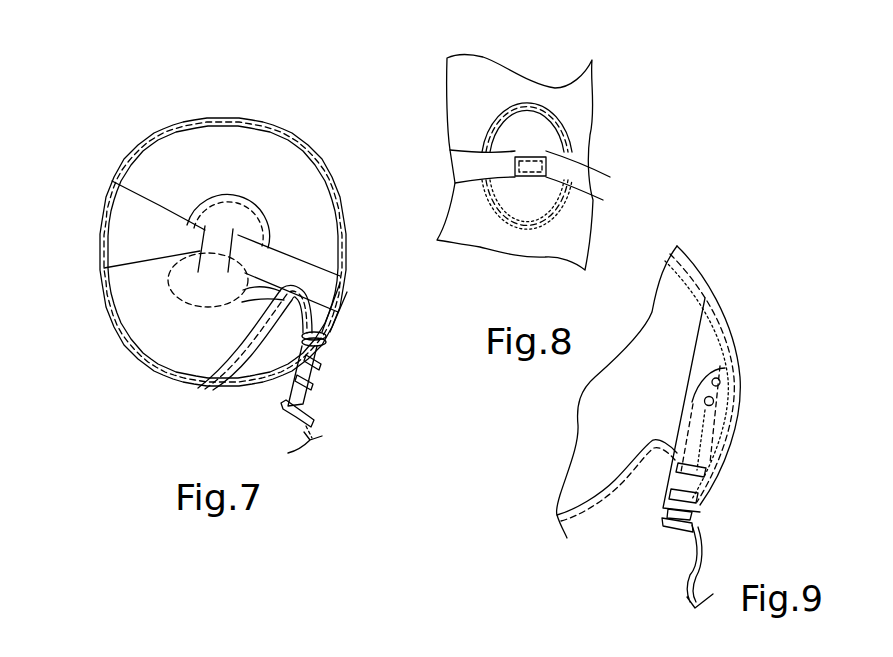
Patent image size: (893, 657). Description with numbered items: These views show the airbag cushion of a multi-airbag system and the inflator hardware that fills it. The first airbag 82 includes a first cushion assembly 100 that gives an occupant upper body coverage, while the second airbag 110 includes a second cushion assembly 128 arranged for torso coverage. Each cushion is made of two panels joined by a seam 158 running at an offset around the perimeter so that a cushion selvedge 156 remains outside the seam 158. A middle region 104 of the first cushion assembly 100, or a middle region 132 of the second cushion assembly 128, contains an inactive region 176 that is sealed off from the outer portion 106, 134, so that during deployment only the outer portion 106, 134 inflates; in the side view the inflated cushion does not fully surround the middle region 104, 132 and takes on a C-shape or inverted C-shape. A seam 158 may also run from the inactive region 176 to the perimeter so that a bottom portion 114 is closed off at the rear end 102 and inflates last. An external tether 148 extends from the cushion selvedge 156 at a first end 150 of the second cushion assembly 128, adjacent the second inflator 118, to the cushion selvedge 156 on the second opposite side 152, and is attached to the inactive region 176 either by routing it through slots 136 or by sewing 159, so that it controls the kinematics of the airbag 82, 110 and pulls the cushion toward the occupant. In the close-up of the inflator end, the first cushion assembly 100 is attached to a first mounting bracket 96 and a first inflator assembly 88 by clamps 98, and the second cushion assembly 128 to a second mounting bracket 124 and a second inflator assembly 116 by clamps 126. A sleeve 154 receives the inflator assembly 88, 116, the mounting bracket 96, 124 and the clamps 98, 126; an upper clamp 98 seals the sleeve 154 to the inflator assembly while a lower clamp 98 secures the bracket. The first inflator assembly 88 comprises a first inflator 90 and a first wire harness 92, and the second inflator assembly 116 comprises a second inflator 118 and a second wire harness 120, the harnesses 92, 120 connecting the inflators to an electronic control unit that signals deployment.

In FIG. 9, the first airbag 82 is at (686, 357).
In FIG. 9, the first inflator assembly 88 is at (739, 529).
In FIG. 9, the first inflator 90 is at (759, 411).
In FIG. 9, the first wire harness 92 is at (644, 569).
In FIG. 9, the first mounting bracket 96 is at (759, 411).
In FIG. 9, the clamp 98 is at (753, 483).
In FIG. 8, the first cushion assembly 100 is at (582, 161).
In FIG. 9, the first cushion assembly 100 is at (737, 366).
In FIG. 7, the rear end 102 is at (345, 296).
In FIG. 8, the middle region 104 is at (549, 162).
In FIG. 8, the outer portion 106 is at (549, 162).
In FIG. 9, the second airbag 110 is at (703, 222).
In FIG. 7, the bottom portion 114 is at (172, 357).
In FIG. 7, the second inflator assembly 116 is at (312, 354).
In FIG. 9, the second inflator assembly 116 is at (707, 510).
In FIG. 7, the second inflator 118 is at (309, 386).
In FIG. 9, the second inflator 118 is at (722, 368).
In FIG. 7, the second wire harness 120 is at (306, 410).
In FIG. 9, the second wire harness 120 is at (687, 592).
In FIG. 9, the second mounting bracket 124 is at (759, 411).
In FIG. 7, the clamp 126 is at (324, 333).
In FIG. 9, the clamp 126 is at (698, 495).
In FIG. 7, the second cushion assembly 128 is at (225, 214).
In FIG. 8, the second cushion assembly 128 is at (586, 104).
In FIG. 9, the second cushion assembly 128 is at (737, 366).
In FIG. 7, the middle region 132 is at (219, 240).
In FIG. 8, the middle region 132 is at (549, 162).
In FIG. 7, the outer portion 134 is at (219, 240).
In FIG. 8, the outer portion 134 is at (549, 162).
In FIG. 7, the slot 136 is at (258, 153).
In FIG. 7, the external tether 148 is at (212, 240).
In FIG. 8, the external tether 148 is at (552, 106).
In FIG. 7, the first end 150 is at (265, 252).
In FIG. 7, the second opposite side 152 is at (225, 252).
In FIG. 9, the sleeve 154 is at (759, 411).
In FIG. 7, the cushion selvedge 156 is at (265, 252).
In FIG. 9, the cushion selvedge 156 is at (737, 366).
In FIG. 7, the seam 158 is at (200, 212).
In FIG. 8, the seam 158 is at (545, 99).
In FIG. 9, the seam 158 is at (678, 312).
In FIG. 8, the sewing 159 is at (525, 173).
In FIG. 7, the inactive region 176 is at (223, 283).
In FIG. 8, the inactive region 176 is at (560, 172).